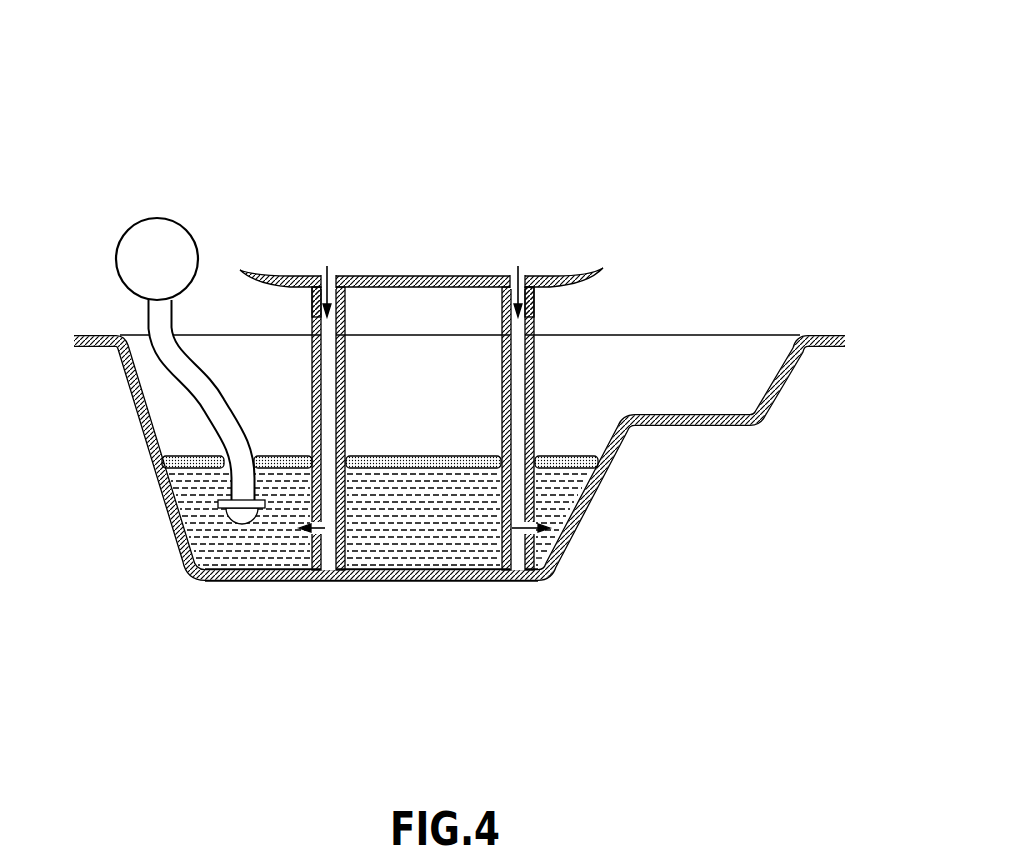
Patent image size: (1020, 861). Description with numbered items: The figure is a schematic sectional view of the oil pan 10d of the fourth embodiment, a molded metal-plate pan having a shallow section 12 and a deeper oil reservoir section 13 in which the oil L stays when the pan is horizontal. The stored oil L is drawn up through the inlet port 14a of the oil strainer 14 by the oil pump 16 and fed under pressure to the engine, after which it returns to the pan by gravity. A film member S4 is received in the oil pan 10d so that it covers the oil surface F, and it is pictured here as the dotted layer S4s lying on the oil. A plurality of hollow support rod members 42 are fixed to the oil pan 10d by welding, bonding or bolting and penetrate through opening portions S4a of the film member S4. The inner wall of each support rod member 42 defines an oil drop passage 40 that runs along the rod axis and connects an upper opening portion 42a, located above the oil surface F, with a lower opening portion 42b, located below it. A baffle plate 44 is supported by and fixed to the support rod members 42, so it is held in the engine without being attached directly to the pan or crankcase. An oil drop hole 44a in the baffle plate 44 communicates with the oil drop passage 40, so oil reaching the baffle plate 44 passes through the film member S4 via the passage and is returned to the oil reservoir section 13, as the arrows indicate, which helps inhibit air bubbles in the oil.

The oil pan 10d is at (451, 356).
The shallow section 12 is at (702, 426).
The oil reservoir section 13 is at (432, 580).
The oil strainer 14 is at (158, 372).
The inlet port 14a is at (243, 525).
The oil pump 16 is at (156, 220).
The oil drop passage 40 is at (425, 432).
The support rod member 42 is at (353, 580).
The upper opening portion 42a is at (312, 297).
The lower opening portion 42b is at (302, 580).
The baffle plate 44 is at (586, 268).
The oil drop hole 44a is at (328, 264).
The film member S4 is at (592, 477).
The opening portion S4a is at (374, 458).
The suction chamber S4s is at (293, 458).
The oil L is at (374, 483).
The oil surface F is at (588, 489).